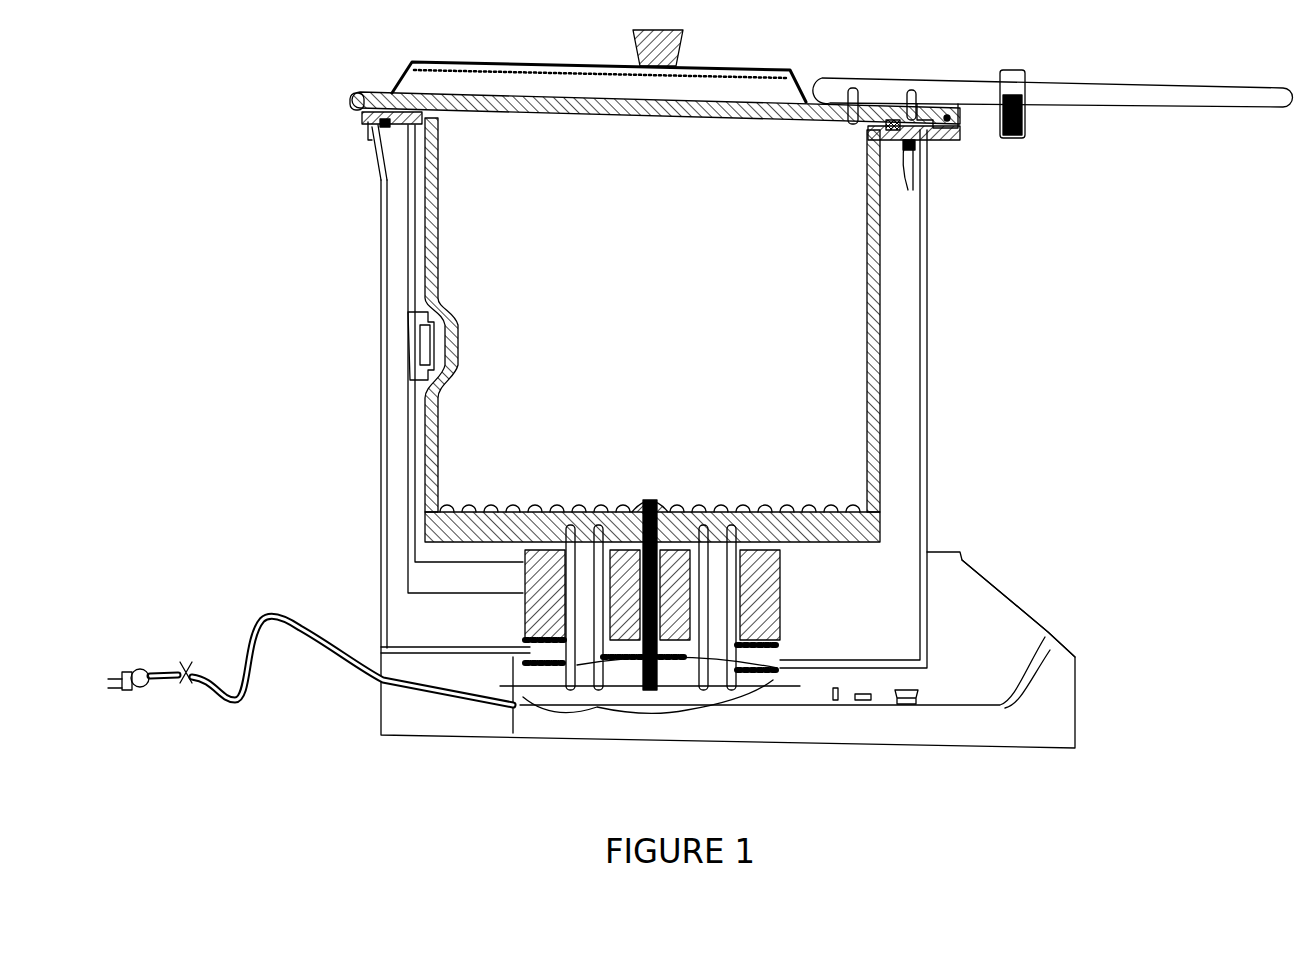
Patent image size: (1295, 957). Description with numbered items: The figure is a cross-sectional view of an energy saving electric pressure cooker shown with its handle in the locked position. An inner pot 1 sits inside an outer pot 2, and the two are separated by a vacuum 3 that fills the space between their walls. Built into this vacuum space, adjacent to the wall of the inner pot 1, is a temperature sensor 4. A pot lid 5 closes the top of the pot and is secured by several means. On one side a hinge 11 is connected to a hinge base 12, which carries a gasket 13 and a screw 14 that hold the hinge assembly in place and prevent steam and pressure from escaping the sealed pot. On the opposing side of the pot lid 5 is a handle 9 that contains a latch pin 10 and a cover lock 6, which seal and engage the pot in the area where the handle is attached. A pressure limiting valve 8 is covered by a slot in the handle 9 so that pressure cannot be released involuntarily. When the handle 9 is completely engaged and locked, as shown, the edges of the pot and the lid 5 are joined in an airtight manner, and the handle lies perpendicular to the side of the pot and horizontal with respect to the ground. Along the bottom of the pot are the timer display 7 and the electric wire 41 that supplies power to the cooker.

The inner pot 1 is at (868, 378).
The outer pot 2 is at (382, 417).
The vacuum 3 is at (383, 578).
The temperature sensor 4 is at (408, 320).
The pot lid 5 is at (530, 88).
The cover lock 6 is at (908, 140).
The timer display 7 is at (1018, 605).
The pressure limiting valve 8 is at (878, 88).
The handle 9 is at (1280, 95).
The latch pin 10 is at (898, 118).
The hinge 11 is at (368, 96).
The hinge base 12 is at (363, 120).
The gasket 13 is at (366, 138).
The screw 14 is at (378, 180).
The electric wire 41 is at (350, 668).